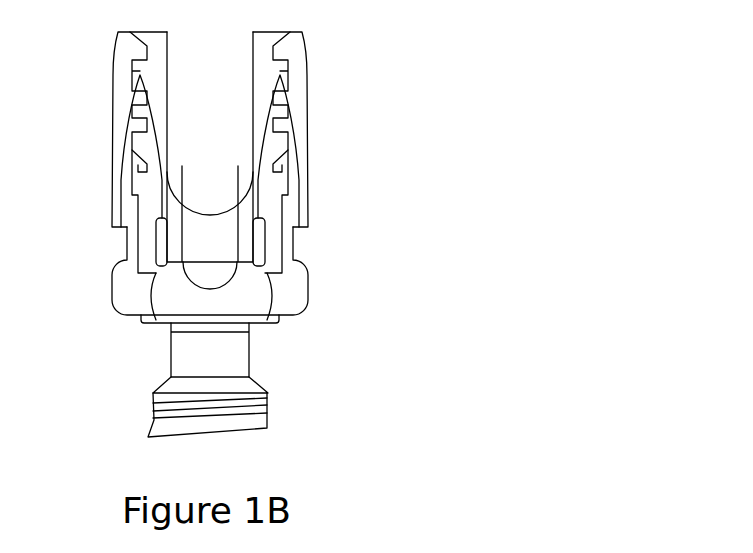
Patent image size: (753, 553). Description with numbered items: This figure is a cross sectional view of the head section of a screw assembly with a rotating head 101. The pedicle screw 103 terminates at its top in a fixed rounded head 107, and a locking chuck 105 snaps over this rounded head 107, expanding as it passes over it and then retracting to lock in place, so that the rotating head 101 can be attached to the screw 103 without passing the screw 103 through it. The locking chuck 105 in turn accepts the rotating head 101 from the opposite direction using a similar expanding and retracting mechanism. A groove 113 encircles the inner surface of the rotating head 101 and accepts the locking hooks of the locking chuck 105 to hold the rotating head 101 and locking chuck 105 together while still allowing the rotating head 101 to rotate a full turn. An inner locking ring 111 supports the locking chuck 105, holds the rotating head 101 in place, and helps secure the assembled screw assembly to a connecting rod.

The rotating head 101 is at (293, 70).
The groove 113 is at (287, 187).
The inner locking ring 111 is at (260, 240).
The locking chuck 105 is at (273, 298).
The rounded head 107 is at (182, 298).
The screw 103 is at (253, 418).